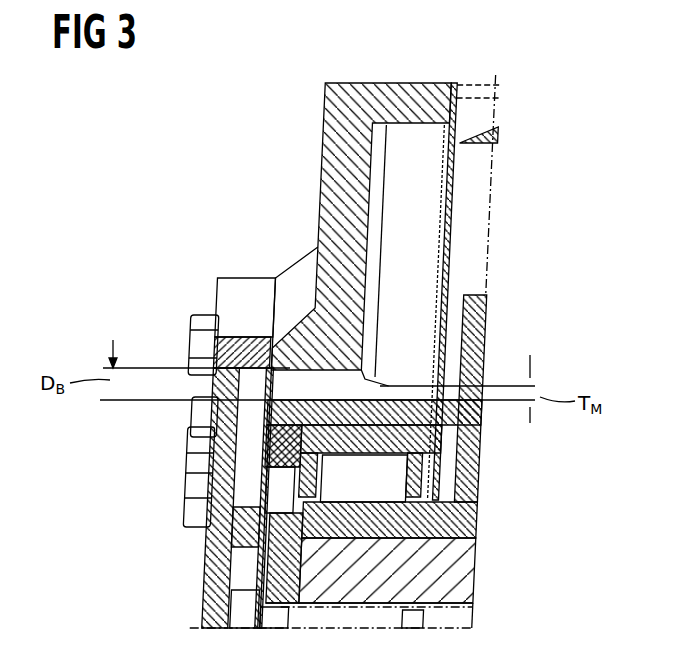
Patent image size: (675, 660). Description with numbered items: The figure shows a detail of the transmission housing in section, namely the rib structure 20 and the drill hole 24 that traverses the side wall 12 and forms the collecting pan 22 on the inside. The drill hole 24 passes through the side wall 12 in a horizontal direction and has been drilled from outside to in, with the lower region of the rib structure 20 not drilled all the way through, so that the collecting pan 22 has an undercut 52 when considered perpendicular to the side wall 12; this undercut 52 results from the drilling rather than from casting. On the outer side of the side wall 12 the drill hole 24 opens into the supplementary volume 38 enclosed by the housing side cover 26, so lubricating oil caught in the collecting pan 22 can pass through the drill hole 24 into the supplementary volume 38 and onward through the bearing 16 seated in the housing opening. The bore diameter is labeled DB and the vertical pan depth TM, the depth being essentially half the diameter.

The side wall 12 is at (325, 158).
The rib structure 20 is at (415, 210).
The collecting pan 22 is at (392, 380).
The drill hole 24 is at (280, 330).
The housing side cover 26 is at (205, 553).
The supplementary volume 38 is at (240, 463).
The undercut 52 is at (483, 425).
The bearing 16 is at (480, 530).